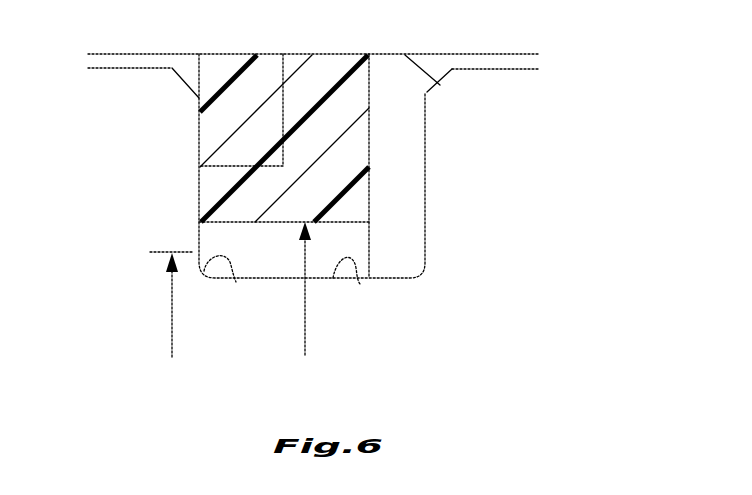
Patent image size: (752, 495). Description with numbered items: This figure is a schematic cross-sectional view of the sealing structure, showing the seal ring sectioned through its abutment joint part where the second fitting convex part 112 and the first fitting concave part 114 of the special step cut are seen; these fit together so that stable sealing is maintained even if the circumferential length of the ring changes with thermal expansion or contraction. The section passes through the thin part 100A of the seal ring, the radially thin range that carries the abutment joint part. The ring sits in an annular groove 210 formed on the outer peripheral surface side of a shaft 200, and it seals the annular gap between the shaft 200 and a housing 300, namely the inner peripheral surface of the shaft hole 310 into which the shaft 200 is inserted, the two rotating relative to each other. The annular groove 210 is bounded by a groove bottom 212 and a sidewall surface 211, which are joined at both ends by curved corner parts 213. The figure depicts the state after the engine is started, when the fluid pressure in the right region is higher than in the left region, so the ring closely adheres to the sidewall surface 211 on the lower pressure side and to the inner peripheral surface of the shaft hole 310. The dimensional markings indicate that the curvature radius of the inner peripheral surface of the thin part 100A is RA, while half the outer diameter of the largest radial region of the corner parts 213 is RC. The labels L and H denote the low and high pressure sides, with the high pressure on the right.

The thin part 100A is at (366, 149).
The second fitting convex part 112 is at (215, 125).
The first fitting concave part 114 is at (283, 124).
The shaft 200 is at (380, 115).
The annular groove 210 is at (413, 201).
The sidewall surface 211 is at (200, 145).
The groove bottom 212 is at (360, 284).
The corner parts 213 is at (236, 282).
The housing 300 is at (313, 33).
The shaft hole 310 is at (425, 93).
The curvature radius of the inner peripheral surface of the thin part RA is at (321, 288).
The half the outer diameter of the largest region of the corner parts RC is at (160, 304).
The low level L is at (61, 63).
The high level H is at (567, 64).